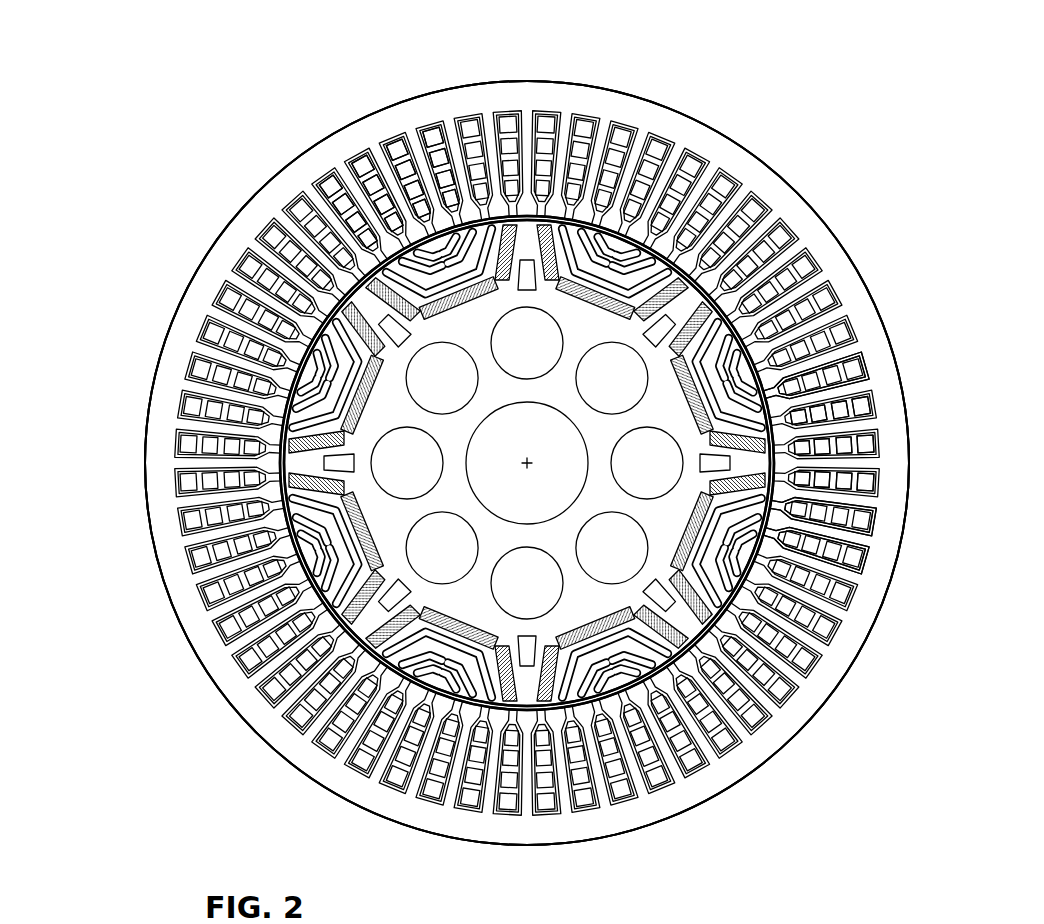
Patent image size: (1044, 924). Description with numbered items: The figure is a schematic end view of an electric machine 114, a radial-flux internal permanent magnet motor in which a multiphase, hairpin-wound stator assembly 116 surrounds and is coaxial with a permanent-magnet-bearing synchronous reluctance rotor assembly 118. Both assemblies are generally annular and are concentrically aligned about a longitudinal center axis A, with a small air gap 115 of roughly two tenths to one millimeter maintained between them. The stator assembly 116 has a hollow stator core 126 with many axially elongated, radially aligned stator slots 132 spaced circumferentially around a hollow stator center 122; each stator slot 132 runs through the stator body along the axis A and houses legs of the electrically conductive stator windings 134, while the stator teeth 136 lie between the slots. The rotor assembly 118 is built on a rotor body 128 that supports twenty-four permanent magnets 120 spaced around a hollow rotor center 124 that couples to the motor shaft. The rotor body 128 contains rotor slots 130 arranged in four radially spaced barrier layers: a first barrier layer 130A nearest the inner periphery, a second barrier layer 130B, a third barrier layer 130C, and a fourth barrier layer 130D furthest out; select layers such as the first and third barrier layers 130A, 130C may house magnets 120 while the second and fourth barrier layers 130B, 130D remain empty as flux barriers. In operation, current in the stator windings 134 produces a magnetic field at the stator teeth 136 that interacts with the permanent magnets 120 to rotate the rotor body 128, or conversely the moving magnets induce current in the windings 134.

The electric machine 114 is at (900, 139).
The air gap 115 is at (538, 218).
The stator assembly 116 is at (905, 340).
The rotor assembly 118 is at (283, 440).
The permanent magnets 120 is at (295, 458).
The hollow stator center 122 is at (790, 488).
The hollow rotor center 124 is at (492, 438).
The stator core 126 is at (868, 278).
The rotor body 128 is at (530, 218).
The rotor slots 130 is at (300, 488).
The first barrier layer 130A is at (378, 252).
The second barrier layer 130B is at (406, 240).
The third barrier layer 130C is at (430, 223).
The fourth barrier layer 130D is at (448, 212).
The stator slots 132 is at (872, 403).
The stator windings 134 is at (880, 375).
The stator teeth 136 is at (703, 397).
The longitudinal center axis A is at (531, 465).